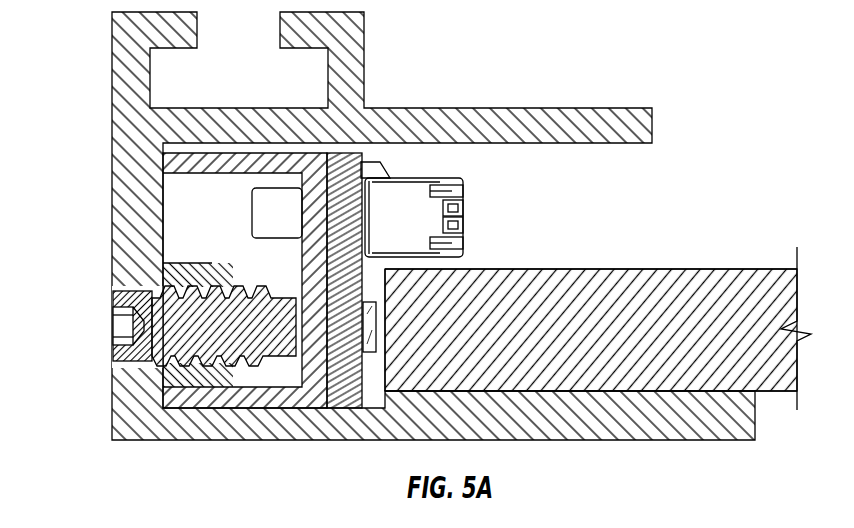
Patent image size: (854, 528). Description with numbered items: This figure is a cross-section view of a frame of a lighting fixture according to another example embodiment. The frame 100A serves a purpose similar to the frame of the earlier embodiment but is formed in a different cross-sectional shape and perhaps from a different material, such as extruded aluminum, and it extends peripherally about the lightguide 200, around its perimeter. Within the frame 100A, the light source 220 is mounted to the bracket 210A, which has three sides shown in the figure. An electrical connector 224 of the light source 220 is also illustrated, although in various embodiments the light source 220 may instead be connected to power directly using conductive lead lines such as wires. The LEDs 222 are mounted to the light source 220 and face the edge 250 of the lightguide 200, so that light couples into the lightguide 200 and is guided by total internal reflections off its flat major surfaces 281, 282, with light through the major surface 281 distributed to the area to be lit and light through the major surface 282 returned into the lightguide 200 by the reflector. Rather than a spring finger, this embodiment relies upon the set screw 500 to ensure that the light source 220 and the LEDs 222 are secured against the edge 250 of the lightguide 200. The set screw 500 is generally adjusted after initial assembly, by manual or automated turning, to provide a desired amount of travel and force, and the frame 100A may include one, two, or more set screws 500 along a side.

The frame 100A is at (113, 166).
The bracket 210A is at (192, 162).
The light source 220 is at (323, 290).
The LEDs 222 is at (368, 321).
The electrical connector 224 is at (463, 208).
The edge 250 is at (385, 287).
The lightguide 200 is at (633, 282).
The major surface 281 is at (677, 388).
The major surface 282 is at (718, 268).
The set screw 500 is at (113, 296).